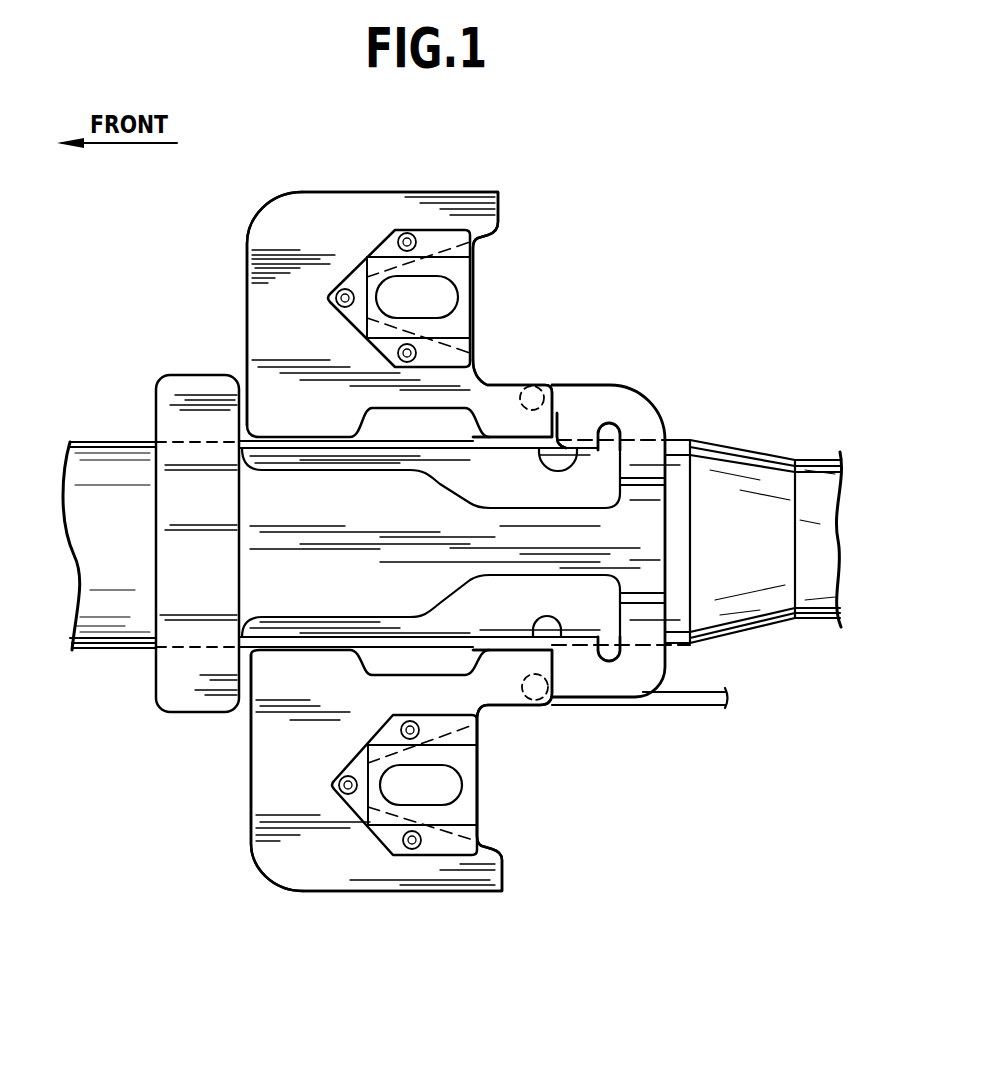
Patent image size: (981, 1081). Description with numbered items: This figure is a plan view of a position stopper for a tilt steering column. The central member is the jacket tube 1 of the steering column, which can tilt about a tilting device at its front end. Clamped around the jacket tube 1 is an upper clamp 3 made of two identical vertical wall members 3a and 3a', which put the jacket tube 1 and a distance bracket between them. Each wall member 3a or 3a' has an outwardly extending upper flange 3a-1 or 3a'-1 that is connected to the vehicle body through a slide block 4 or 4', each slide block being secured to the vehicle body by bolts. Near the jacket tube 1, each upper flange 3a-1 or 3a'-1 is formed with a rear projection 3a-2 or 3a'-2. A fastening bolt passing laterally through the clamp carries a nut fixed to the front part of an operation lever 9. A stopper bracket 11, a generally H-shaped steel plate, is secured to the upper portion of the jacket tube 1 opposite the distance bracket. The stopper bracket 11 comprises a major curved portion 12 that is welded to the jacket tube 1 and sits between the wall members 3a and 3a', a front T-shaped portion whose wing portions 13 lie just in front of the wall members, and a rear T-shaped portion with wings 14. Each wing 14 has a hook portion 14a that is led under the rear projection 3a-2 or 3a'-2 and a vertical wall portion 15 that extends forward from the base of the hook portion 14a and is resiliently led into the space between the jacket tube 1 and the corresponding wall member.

The jacket tube 1 is at (730, 465).
The upper clamp 3 is at (249, 791).
The vertical wall member 3a is at (361, 320).
The upper flange 3a-1 is at (365, 192).
The rear projection 3a-2 is at (505, 395).
The vertical wall member 3a' is at (319, 749).
The upper flange 3a'-1 is at (402, 836).
The rear projection 3a'-2 is at (517, 738).
The slide block 4 is at (439, 298).
The slide block 4' is at (406, 833).
The operation lever 9 is at (687, 707).
The stopper bracket 11 is at (652, 391).
The major curved portion 12 is at (190, 590).
The wing portion 13 is at (193, 383).
The wing 14 is at (637, 385).
The hook portion 14a is at (543, 386).
The vertical wall portion 15 is at (580, 450).